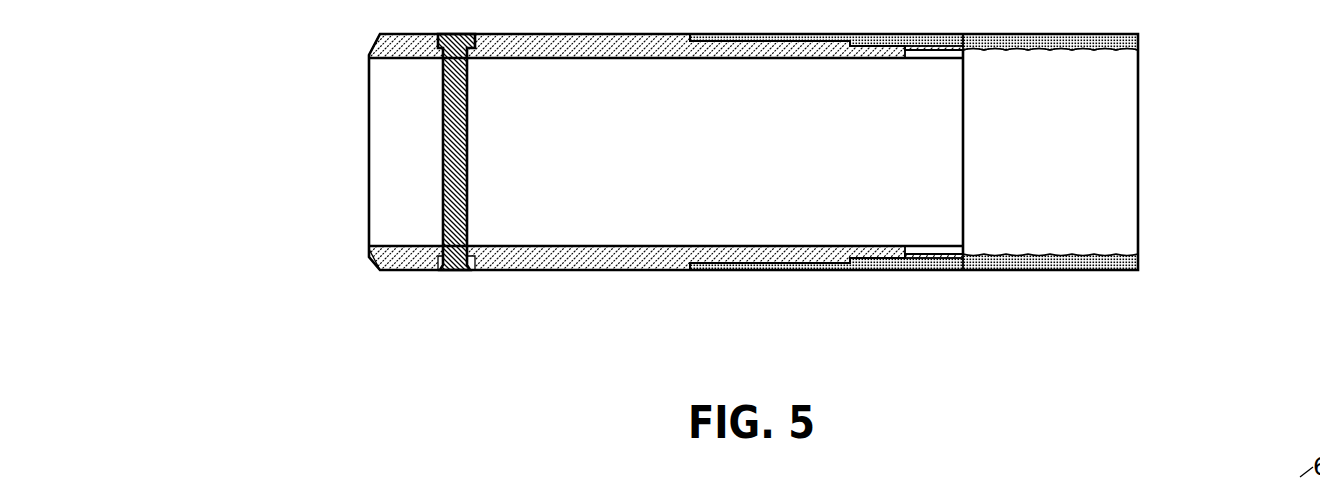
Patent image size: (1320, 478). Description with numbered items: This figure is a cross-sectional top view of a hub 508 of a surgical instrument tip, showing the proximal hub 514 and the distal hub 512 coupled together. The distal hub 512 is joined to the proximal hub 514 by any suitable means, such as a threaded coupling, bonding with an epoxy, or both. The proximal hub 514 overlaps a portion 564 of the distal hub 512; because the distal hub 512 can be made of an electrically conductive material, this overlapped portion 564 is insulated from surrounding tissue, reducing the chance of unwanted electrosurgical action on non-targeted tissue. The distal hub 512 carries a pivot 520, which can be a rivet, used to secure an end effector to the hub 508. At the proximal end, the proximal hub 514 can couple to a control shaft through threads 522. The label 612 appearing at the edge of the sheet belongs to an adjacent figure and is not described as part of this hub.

The hub 508 is at (156, 67).
The distal hub 512 is at (545, 271).
The proximal hub 514 is at (1063, 271).
The pivot 520 is at (457, 271).
The threads 522 is at (1083, 68).
The overlapped portion 564 is at (690, 302).
The label of adjacent figure 612 is at (194, 477).